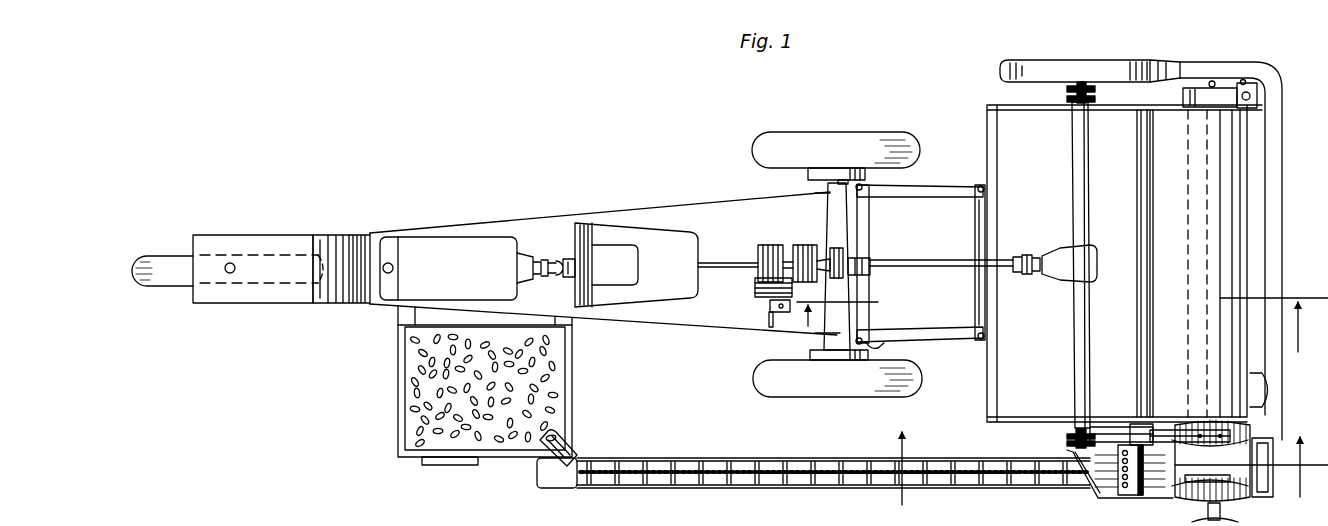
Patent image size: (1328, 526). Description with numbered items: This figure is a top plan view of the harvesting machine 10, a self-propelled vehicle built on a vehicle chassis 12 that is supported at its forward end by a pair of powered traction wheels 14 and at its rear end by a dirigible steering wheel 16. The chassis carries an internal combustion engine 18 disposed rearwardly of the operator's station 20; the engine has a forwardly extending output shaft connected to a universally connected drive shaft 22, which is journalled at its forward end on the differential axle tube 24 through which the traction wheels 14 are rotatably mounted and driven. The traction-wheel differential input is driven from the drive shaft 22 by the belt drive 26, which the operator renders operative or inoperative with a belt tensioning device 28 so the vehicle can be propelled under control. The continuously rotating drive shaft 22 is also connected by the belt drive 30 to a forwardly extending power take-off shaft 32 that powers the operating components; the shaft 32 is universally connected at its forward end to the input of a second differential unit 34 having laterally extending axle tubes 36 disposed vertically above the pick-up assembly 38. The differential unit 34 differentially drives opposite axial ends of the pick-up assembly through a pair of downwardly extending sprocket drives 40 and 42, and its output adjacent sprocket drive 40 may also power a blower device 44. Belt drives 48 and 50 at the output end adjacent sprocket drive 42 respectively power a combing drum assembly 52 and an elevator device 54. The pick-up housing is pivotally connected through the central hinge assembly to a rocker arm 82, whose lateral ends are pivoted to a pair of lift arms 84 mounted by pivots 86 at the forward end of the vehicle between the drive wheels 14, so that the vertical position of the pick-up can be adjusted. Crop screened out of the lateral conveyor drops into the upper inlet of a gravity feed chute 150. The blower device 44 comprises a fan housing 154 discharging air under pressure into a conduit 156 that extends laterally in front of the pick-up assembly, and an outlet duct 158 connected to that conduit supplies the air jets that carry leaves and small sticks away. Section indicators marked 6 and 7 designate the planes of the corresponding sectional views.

The harvesting machine 10 is at (460, 188).
The vehicle chassis 12 is at (693, 195).
The powered traction wheels 14 is at (792, 151).
The dirigible steering wheel 16 is at (163, 262).
The internal combustion engine 18 is at (478, 236).
The operator's station 20 is at (645, 237).
The universally connected drive shaft 22 is at (718, 262).
The differential axle tube 24 is at (832, 221).
The belt drive 26 is at (768, 246).
The belt tensioning device 28 is at (757, 291).
The belt drive 30 is at (800, 246).
The power take-off shaft 32 is at (898, 259).
The second differential unit 34 is at (1058, 264).
The laterally extending axle tubes 36 is at (1073, 191).
The pick-up assembly 38 is at (996, 103).
The sprocket drive 40 is at (1064, 94).
The sprocket drive 42 is at (1062, 438).
The blower device 44 is at (1037, 62).
The belt drive 48 is at (1110, 427).
The belt drive 50 is at (1074, 472).
The combing drum assembly 52 is at (1122, 496).
The elevator device 54 is at (939, 490).
The rocker arm 82 is at (975, 238).
The lift arms 84 is at (951, 340).
The pivots 86 is at (878, 344).
The gravity feed chute 150 is at (1246, 495).
The fan housing 154 is at (1107, 64).
The conduit 156 is at (1278, 190).
The outlet duct 158 is at (1258, 388).
The section line 6- 6 is at (1058, 310).
The section line 7- 7 is at (1111, 451).